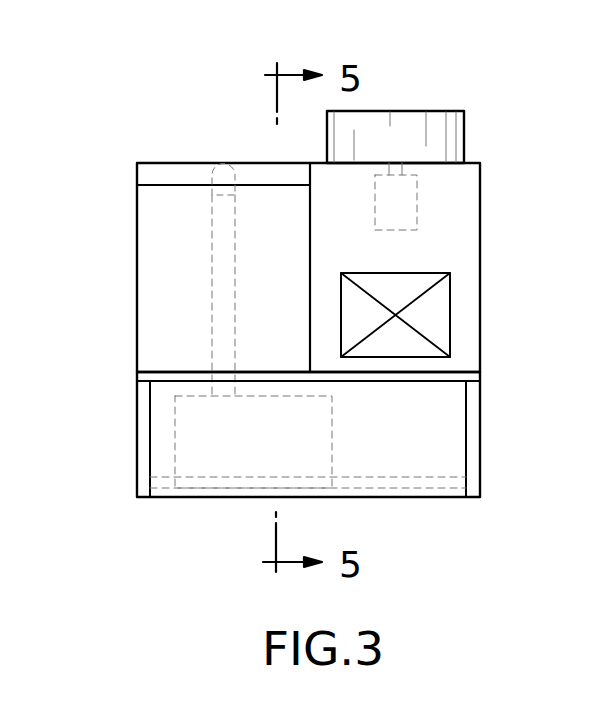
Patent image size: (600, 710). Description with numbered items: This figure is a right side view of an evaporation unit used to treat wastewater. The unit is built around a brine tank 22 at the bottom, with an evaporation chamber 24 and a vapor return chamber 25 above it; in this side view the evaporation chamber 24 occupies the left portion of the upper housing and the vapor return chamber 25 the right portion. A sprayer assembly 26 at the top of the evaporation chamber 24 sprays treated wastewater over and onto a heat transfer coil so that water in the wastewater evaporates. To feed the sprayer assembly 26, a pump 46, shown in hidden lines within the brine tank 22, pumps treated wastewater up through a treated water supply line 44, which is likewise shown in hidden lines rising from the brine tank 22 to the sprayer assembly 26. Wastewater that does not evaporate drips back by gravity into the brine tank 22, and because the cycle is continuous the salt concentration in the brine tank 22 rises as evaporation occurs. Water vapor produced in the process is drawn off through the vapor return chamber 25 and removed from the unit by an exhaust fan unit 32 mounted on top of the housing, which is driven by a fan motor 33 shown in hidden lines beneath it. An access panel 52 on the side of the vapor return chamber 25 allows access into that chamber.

The brine tank 22 is at (466, 417).
The evaporation chamber 24 is at (310, 300).
The vapor return chamber 25 is at (480, 222).
The sprayer assembly 26 is at (188, 185).
The exhaust fan unit 32 is at (440, 111).
The fan motor 33 is at (415, 190).
The treated water supply line 44 is at (212, 250).
The pump 46 is at (177, 445).
The access panel 52 is at (450, 312).